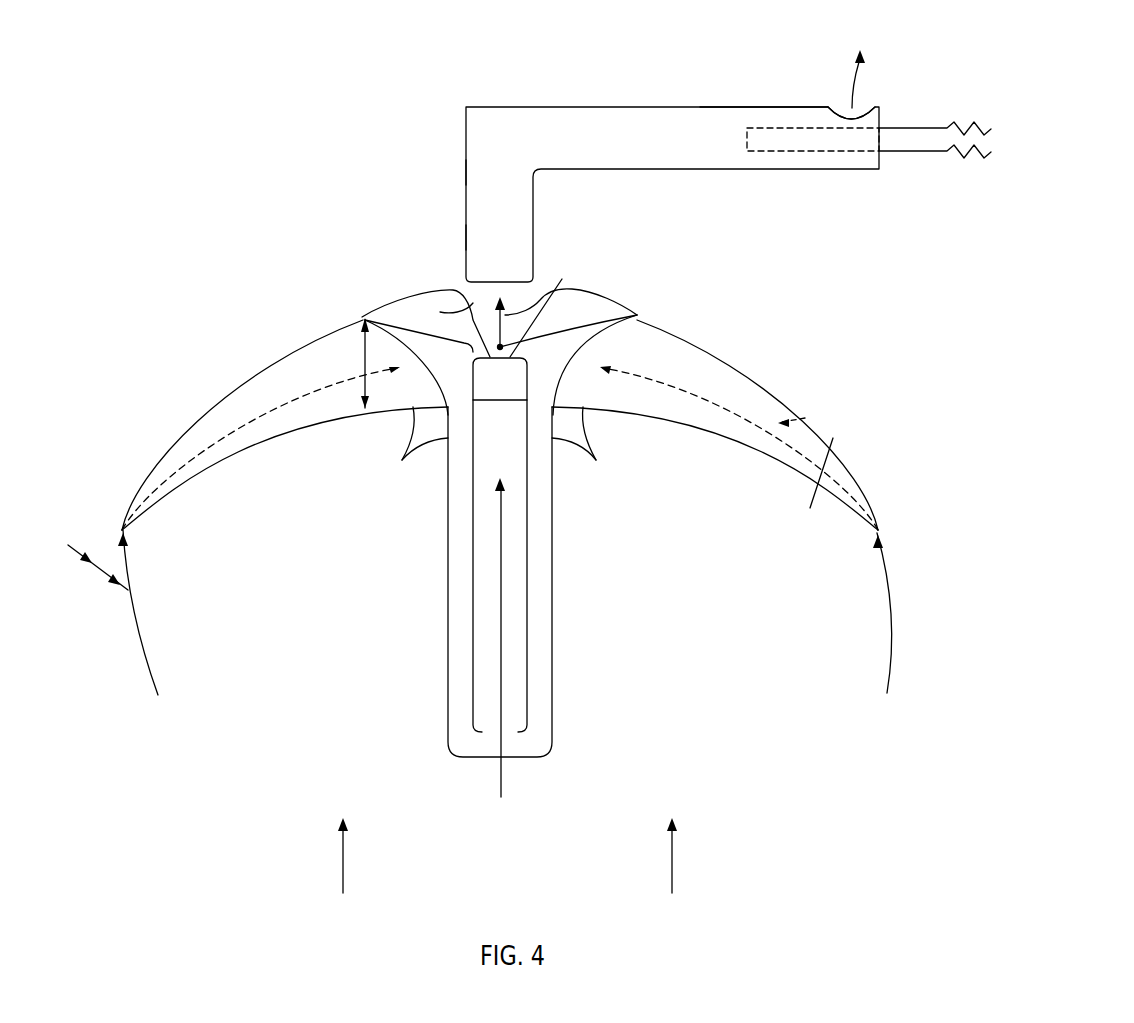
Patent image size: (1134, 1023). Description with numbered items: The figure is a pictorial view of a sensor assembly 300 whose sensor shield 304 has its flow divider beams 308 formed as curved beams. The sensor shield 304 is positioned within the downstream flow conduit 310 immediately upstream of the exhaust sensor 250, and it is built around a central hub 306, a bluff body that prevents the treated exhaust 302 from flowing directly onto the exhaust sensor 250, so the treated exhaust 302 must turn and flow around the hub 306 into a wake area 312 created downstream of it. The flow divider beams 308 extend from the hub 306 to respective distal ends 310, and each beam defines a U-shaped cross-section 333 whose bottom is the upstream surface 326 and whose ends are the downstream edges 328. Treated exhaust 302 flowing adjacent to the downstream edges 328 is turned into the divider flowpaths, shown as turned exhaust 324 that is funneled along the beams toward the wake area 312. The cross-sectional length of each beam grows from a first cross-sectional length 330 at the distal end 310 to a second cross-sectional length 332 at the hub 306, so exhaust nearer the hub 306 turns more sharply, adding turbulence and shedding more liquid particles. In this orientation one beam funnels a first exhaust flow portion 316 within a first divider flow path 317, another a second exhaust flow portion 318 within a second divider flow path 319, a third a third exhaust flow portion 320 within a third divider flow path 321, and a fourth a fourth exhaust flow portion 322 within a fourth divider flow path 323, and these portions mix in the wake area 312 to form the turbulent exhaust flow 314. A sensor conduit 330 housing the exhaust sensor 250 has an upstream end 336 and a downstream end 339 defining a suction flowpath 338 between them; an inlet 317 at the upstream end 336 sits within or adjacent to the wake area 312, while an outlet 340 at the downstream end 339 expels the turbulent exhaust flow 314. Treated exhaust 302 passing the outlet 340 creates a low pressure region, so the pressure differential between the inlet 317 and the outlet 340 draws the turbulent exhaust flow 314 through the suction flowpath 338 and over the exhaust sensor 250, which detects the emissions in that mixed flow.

The sensor assembly 300 is at (210, 96).
The treated exhaust 302 is at (343, 858).
The sensor shield 304 is at (160, 276).
The hub 306 is at (500, 348).
The flow divider beams 308 is at (402, 460).
The distal ends 310 is at (130, 540).
The wake area 312 is at (449, 277).
The turbulent exhaust flow 314 is at (857, 86).
The first exhaust flow portion 316 is at (542, 318).
The first divider flow path 317 is at (545, 265).
The second exhaust flow portion 318 is at (145, 647).
The second divider flow path 319 is at (184, 416).
The third exhaust flow portion 320 is at (498, 773).
The third divider flow path 321 is at (500, 566).
The fourth exhaust flow portion 322 is at (889, 595).
The fourth divider flow path 323 is at (708, 340).
The turned exhaust 324 is at (815, 420).
The upstream surface 326 is at (320, 425).
The downstream edges 328 is at (462, 575).
The sensor conduit 330 is at (466, 172).
The second cross-sectional length 332 is at (360, 338).
The U-shaped cross-section 333 is at (442, 312).
The upstream end 336 is at (466, 238).
The suction flowpath 338 is at (525, 100).
The downstream end 339 is at (732, 107).
The outlet 340 is at (841, 103).
The exhaust sensor 250 is at (912, 128).